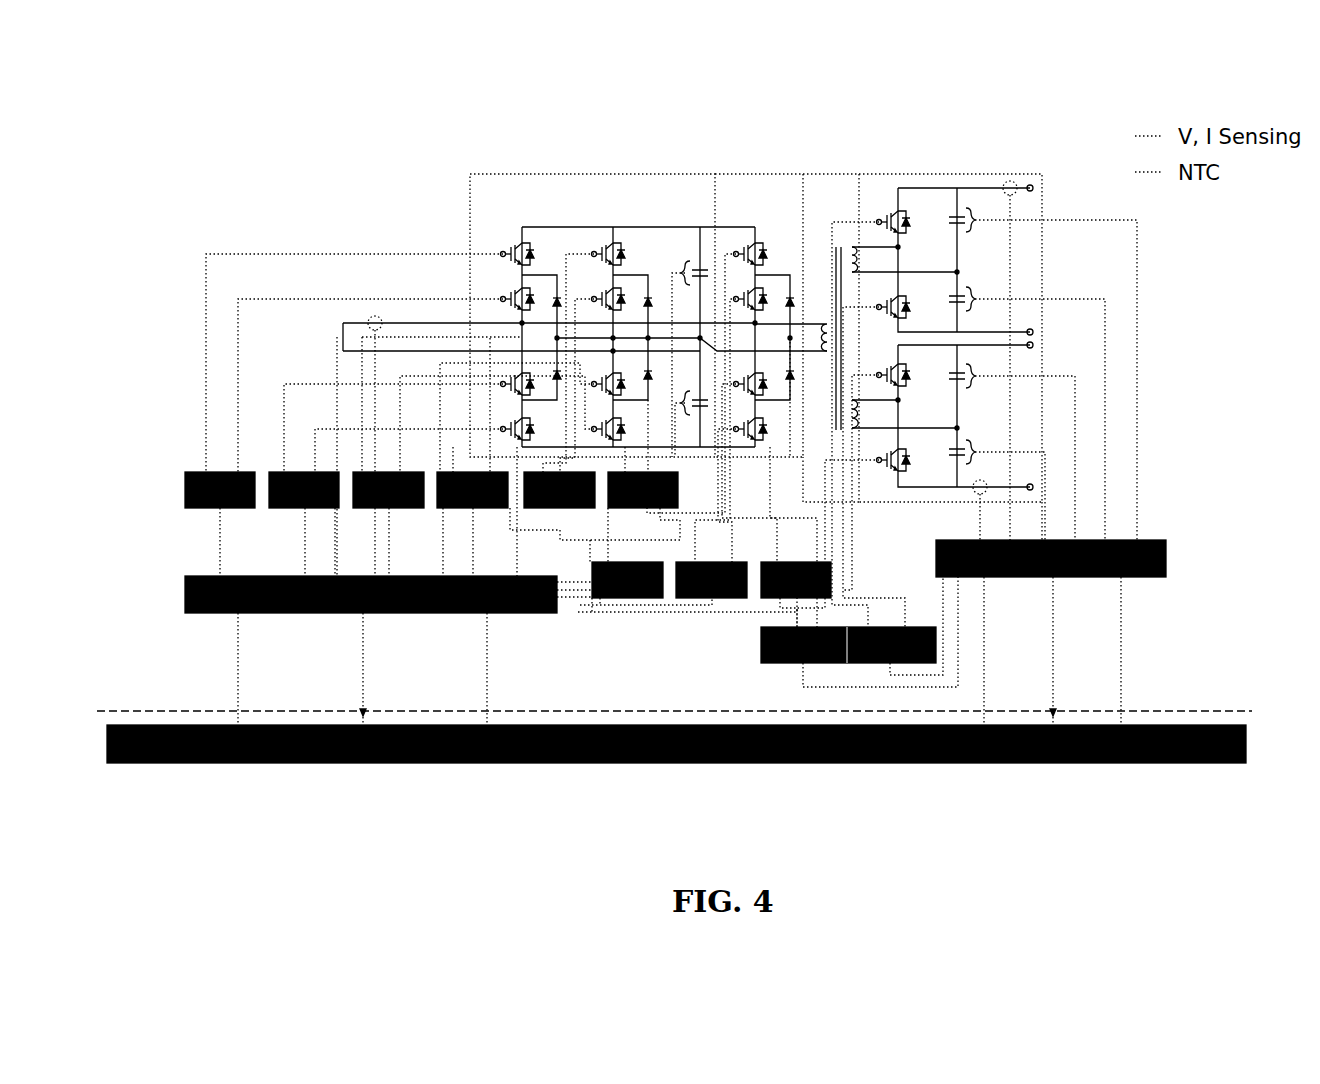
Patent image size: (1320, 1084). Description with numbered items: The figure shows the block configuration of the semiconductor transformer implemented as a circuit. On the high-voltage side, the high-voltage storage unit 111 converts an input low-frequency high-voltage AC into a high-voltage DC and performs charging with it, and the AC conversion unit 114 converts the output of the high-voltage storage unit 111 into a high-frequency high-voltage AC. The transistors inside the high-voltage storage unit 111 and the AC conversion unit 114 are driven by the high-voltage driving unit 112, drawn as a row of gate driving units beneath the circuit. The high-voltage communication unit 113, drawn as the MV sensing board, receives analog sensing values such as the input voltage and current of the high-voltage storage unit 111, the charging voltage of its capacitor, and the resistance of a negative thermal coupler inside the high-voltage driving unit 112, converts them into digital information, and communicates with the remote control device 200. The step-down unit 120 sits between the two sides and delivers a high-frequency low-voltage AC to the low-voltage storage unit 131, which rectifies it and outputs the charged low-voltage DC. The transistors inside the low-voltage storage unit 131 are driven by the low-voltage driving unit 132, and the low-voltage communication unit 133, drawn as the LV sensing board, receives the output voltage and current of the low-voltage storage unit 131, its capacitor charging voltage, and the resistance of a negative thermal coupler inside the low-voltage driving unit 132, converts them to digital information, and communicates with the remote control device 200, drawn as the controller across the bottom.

The high-voltage storage unit 111 is at (583, 174).
The high-voltage driving unit 112 is at (196, 470).
The high-voltage communication unit 113 is at (207, 615).
The AC conversion unit 114 is at (751, 174).
The step-down unit 120 is at (825, 174).
The low-voltage storage unit 131 is at (943, 174).
The low-voltage driving unit 132 is at (760, 642).
The low-voltage communication unit 133 is at (1142, 580).
The remote control device 200 is at (825, 765).